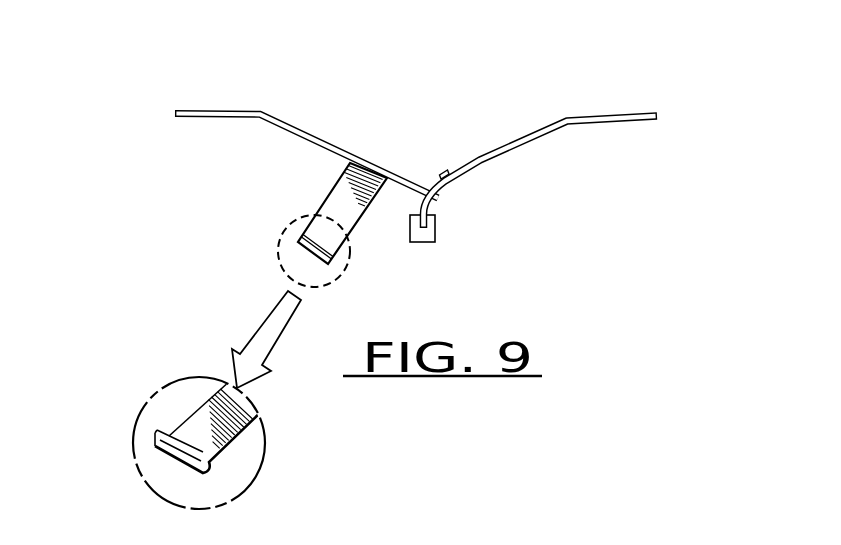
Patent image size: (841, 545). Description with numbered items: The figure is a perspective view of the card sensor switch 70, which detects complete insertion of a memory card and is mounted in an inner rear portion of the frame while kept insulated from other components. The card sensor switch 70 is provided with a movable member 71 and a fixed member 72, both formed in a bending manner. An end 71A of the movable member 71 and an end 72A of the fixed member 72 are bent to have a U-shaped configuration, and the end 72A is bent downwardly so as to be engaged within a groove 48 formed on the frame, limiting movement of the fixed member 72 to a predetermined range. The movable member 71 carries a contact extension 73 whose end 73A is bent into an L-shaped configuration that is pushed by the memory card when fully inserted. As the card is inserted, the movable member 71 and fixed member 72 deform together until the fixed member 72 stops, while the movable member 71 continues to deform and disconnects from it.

The card sensor switch 70 is at (368, 265).
The movable member 71 is at (281, 120).
The end of the movable member 71A is at (445, 174).
The fixed member 72 is at (558, 155).
The end of the fixed member 72A is at (436, 222).
The contact extension 73 is at (216, 336).
The end of the contact extension 73A is at (156, 432).
The groove 48 is at (436, 243).